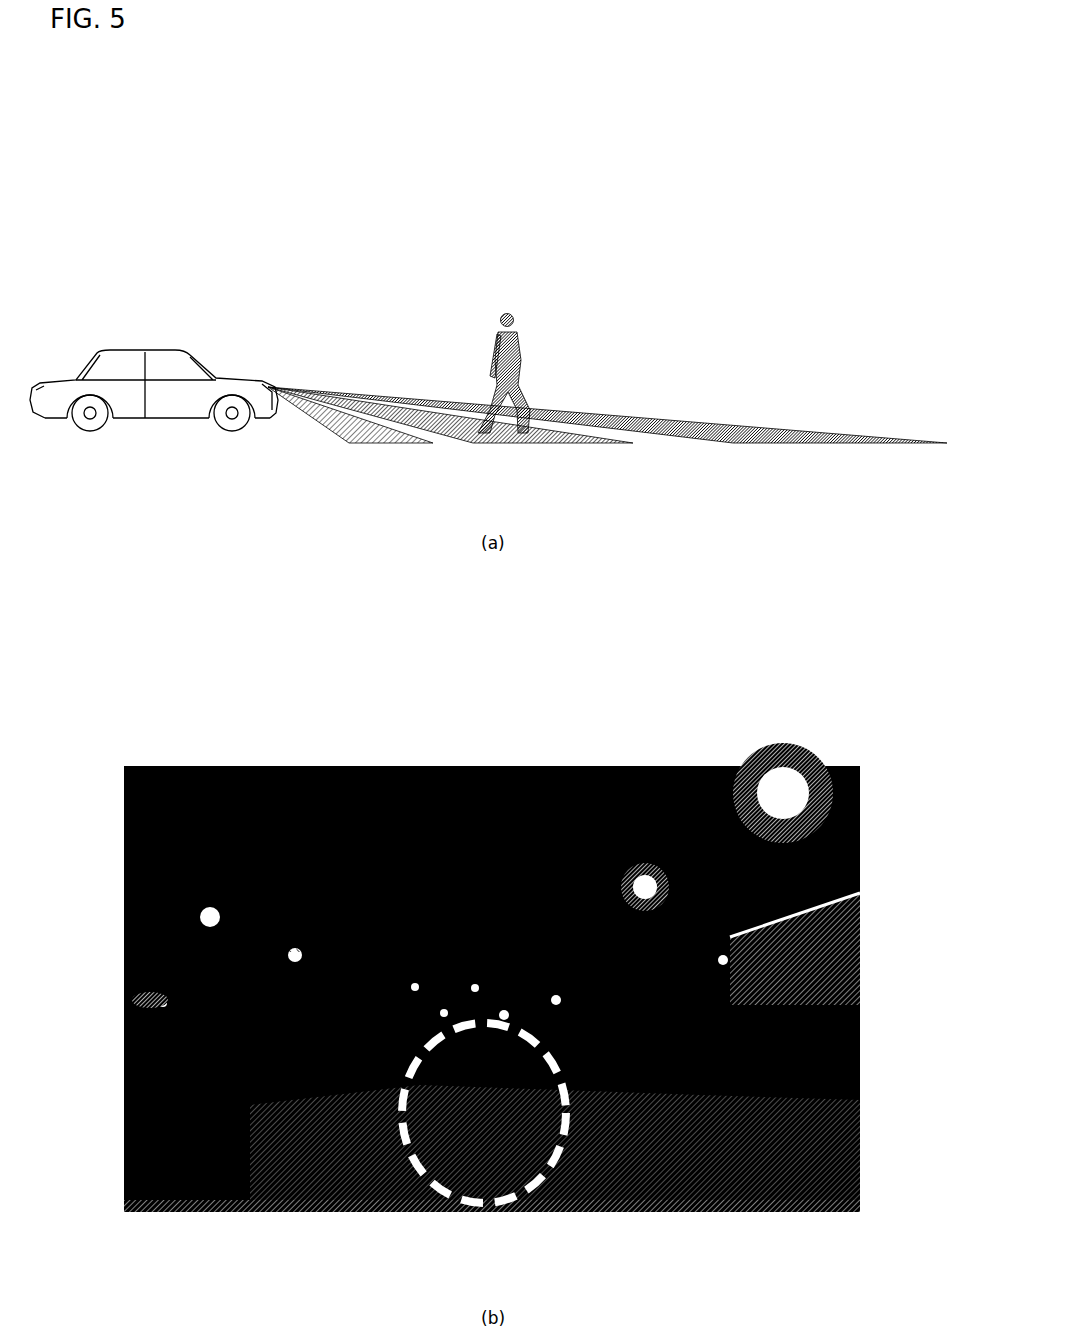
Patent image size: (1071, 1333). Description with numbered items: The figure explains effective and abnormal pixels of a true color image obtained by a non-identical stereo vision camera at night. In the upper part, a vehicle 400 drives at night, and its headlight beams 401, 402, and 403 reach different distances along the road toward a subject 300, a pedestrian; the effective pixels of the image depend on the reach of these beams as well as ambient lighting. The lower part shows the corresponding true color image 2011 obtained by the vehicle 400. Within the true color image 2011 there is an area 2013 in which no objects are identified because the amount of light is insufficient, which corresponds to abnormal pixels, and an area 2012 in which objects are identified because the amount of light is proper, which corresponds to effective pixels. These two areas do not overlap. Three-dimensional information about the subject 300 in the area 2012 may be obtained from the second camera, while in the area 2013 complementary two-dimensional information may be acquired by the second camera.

The subject 300 is at (512, 302).
The vehicle 400 is at (160, 434).
The headlight beam 401 is at (376, 453).
The headlight beam 402 is at (580, 453).
The headlight beam 403 is at (739, 453).
The true color image 2011 is at (694, 760).
The area in which objects are identified 2012 is at (548, 1190).
The area in which no objects are identified 2013 is at (415, 770).